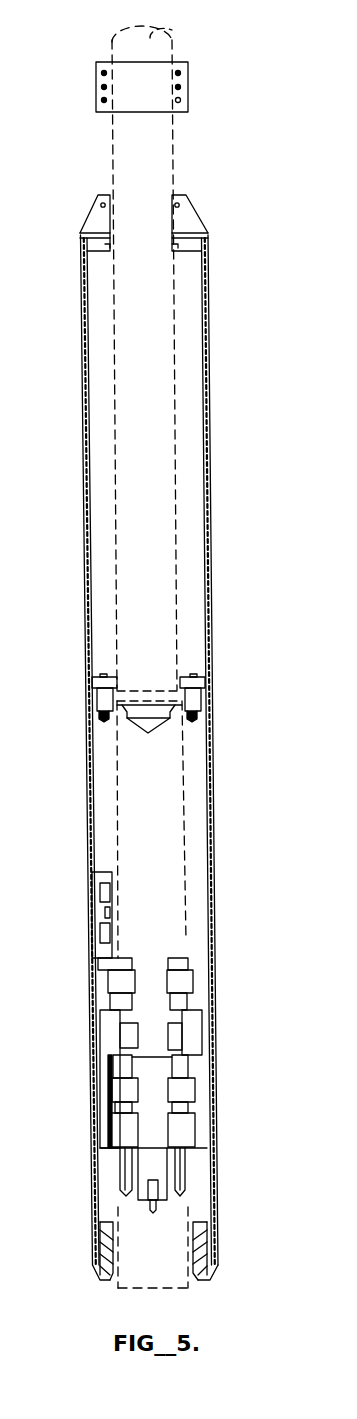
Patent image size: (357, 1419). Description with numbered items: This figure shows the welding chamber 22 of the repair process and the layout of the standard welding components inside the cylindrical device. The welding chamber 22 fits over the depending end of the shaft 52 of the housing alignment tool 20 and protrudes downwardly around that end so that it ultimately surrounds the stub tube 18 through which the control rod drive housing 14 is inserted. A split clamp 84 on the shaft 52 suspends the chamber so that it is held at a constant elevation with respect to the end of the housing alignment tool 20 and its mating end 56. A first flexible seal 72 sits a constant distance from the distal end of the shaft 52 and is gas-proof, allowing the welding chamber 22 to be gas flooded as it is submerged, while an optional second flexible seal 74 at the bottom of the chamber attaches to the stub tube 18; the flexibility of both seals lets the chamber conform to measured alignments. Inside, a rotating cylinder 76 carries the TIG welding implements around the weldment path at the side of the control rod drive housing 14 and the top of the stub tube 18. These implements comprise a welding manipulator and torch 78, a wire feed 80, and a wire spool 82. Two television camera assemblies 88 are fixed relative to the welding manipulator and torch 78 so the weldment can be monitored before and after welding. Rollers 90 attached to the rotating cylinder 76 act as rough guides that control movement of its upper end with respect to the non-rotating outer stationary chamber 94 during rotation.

The control rod drive housing 14 is at (160, 894).
The stub tube 18 is at (108, 1284).
The housing alignment tool 20 is at (191, 31).
The welding chamber 22 is at (243, 366).
The shaft 52 is at (157, 422).
The mating end 56 is at (148, 733).
The first flexible seal 72 is at (181, 243).
The second flexible seal 74 is at (190, 1270).
The rotating cylinder 76 is at (97, 858).
The welding manipulator and torch 78 is at (155, 1165).
The wire feed 80 is at (100, 1037).
The wire spool 82 is at (96, 917).
The split clamp 84 is at (96, 92).
The television camera assemblies 88 is at (135, 975).
The rollers 90 is at (201, 700).
The outer stationary chamber 94 is at (212, 633).